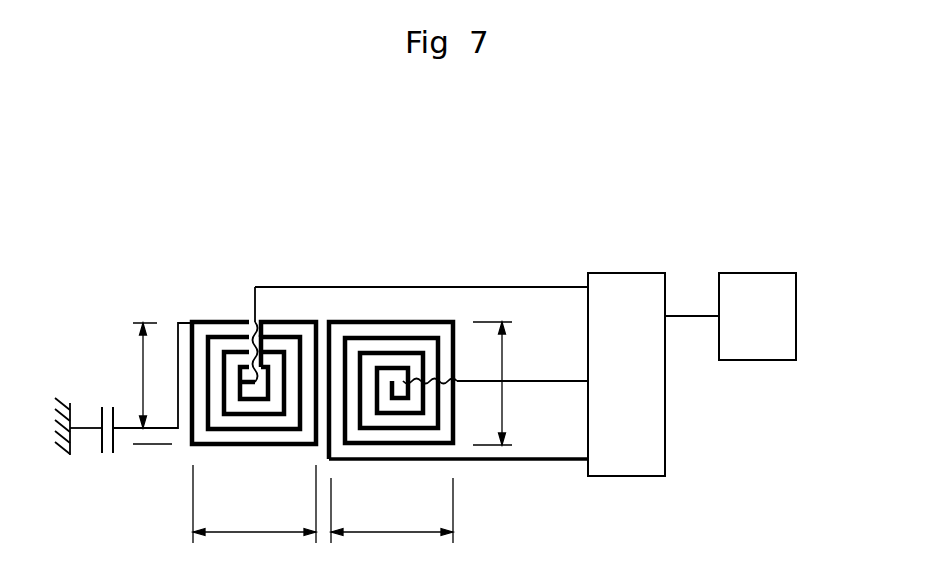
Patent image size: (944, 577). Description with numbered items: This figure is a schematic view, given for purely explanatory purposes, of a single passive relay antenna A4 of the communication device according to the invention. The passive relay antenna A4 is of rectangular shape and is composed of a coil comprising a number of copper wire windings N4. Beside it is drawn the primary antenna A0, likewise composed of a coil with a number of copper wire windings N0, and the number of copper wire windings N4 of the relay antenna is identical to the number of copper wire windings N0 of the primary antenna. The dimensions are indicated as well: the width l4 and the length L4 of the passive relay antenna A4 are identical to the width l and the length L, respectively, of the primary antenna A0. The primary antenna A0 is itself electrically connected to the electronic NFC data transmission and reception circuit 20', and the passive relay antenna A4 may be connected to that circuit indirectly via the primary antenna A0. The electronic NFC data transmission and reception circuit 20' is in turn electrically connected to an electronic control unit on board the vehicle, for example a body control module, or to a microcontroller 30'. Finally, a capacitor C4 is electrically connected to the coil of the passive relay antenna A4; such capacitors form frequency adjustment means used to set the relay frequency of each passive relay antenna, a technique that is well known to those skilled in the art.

The passive relay antenna A4 is at (192, 321).
The copper wire windings N4 is at (283, 335).
The capacitor C4 is at (105, 443).
The primary antenna A0 is at (420, 444).
The copper wire windings N0 is at (491, 340).
The electronic NFC data transmission and reception circuit 20' is at (685, 395).
The microcontroller 30' is at (764, 375).
The width of passive relay antenna l4 is at (145, 383).
The width of primary antenna l is at (492, 383).
The length of passive relay antenna L4 is at (254, 504).
The length of primary antenna L is at (392, 510).